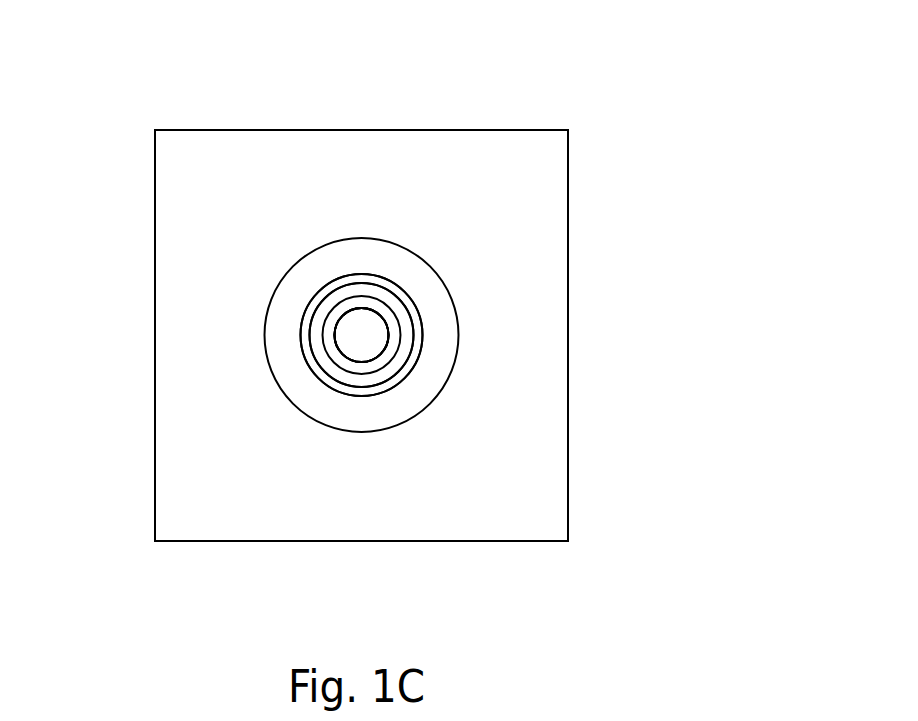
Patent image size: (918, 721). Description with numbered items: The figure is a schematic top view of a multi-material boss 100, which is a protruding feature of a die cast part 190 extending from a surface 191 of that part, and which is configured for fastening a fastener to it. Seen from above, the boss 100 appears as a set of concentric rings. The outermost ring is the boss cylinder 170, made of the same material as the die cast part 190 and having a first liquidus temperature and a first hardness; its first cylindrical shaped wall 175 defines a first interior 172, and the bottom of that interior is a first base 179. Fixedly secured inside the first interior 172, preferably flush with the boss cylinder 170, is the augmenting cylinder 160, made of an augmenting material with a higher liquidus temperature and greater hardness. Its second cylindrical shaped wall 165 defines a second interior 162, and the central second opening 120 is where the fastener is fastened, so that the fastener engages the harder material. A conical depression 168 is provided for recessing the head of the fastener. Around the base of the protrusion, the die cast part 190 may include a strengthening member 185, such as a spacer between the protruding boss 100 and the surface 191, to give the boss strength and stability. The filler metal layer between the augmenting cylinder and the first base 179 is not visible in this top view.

The multi-material boss 100 is at (722, 110).
The second opening 120 is at (385, 343).
The augmenting cylinder 160 is at (403, 313).
The second interior 162 is at (410, 322).
The second cylindrical shaped wall 165 is at (337, 323).
The conical depression 168 is at (362, 302).
The boss cylinder 170 is at (298, 332).
The first interior 172 is at (400, 400).
The first cylindrical shaped wall 175 is at (337, 393).
The first base 179 is at (357, 342).
The strengthening member 185 is at (282, 362).
The die cast part 190 is at (568, 473).
The surface 191 is at (233, 160).